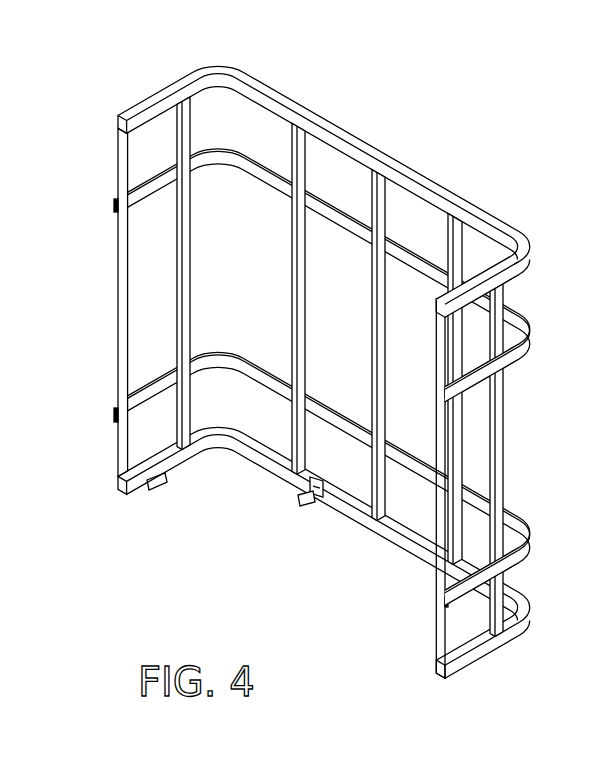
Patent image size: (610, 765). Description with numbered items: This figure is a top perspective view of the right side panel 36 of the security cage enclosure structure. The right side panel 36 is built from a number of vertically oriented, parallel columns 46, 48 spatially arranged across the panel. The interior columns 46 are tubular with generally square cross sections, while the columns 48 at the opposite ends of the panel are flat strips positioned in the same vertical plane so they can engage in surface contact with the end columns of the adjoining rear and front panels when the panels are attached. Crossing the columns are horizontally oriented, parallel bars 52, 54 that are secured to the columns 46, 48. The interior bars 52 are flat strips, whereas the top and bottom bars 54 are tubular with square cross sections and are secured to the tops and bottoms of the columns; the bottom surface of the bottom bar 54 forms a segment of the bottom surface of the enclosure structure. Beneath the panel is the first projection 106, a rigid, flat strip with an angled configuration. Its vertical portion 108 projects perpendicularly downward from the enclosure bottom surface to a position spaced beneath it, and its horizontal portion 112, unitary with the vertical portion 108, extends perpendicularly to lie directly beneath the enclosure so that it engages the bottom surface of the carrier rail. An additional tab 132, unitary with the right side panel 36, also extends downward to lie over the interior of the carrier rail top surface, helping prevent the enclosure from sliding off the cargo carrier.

The right side panel 36 is at (315, 372).
The interior column 46 is at (292, 255).
The outer column 48 is at (120, 276).
The interior bar 52 is at (222, 150).
The top and bottom bar 54 is at (328, 124).
The first projection 106 is at (294, 510).
The vertical portion 108 is at (297, 491).
The horizontal portion 112 is at (304, 503).
The additional tab 132 is at (158, 484).